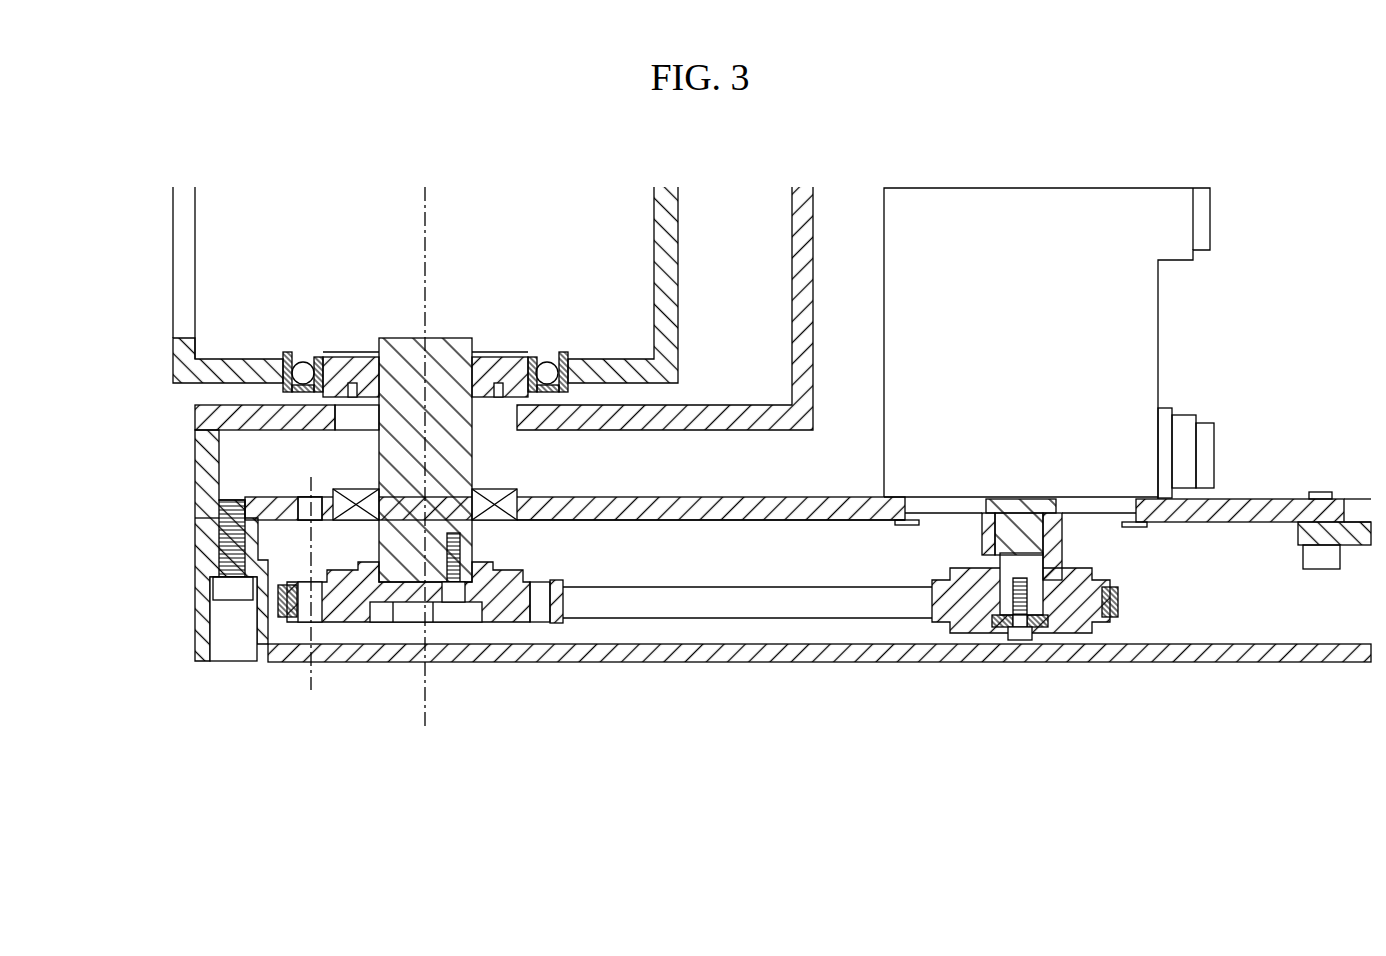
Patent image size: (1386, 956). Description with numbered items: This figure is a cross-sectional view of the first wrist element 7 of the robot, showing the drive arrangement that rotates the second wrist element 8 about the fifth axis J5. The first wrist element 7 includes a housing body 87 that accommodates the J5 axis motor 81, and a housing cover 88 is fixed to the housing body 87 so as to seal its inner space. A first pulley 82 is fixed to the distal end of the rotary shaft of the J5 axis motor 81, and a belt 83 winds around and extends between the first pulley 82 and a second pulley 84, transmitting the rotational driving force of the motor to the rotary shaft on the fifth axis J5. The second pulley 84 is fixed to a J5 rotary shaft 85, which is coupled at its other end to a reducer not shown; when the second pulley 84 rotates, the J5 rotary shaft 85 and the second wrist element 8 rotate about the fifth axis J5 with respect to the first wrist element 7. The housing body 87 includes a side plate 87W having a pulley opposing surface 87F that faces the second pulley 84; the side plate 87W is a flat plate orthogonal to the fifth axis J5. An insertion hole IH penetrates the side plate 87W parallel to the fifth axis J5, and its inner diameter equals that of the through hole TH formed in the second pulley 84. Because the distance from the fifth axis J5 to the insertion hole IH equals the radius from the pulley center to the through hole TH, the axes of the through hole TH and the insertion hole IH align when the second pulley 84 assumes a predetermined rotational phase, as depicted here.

The first wrist element 7 is at (1181, 92).
The second wrist element 8 is at (173, 347).
The J5 axis motor 81 is at (1003, 188).
The first pulley 82 is at (1072, 634).
The belt 83 is at (805, 618).
The second pulley 84 is at (493, 622).
The J5 rotary shaft 85 is at (397, 338).
The housing body 87 is at (1267, 492).
The pulley opposing surface 87F is at (548, 527).
The side plate 87W is at (702, 522).
The housing cover 88 is at (992, 663).
The insertion hole IH is at (303, 497).
The through hole TH is at (307, 620).
The fifth axis J5 is at (426, 471).